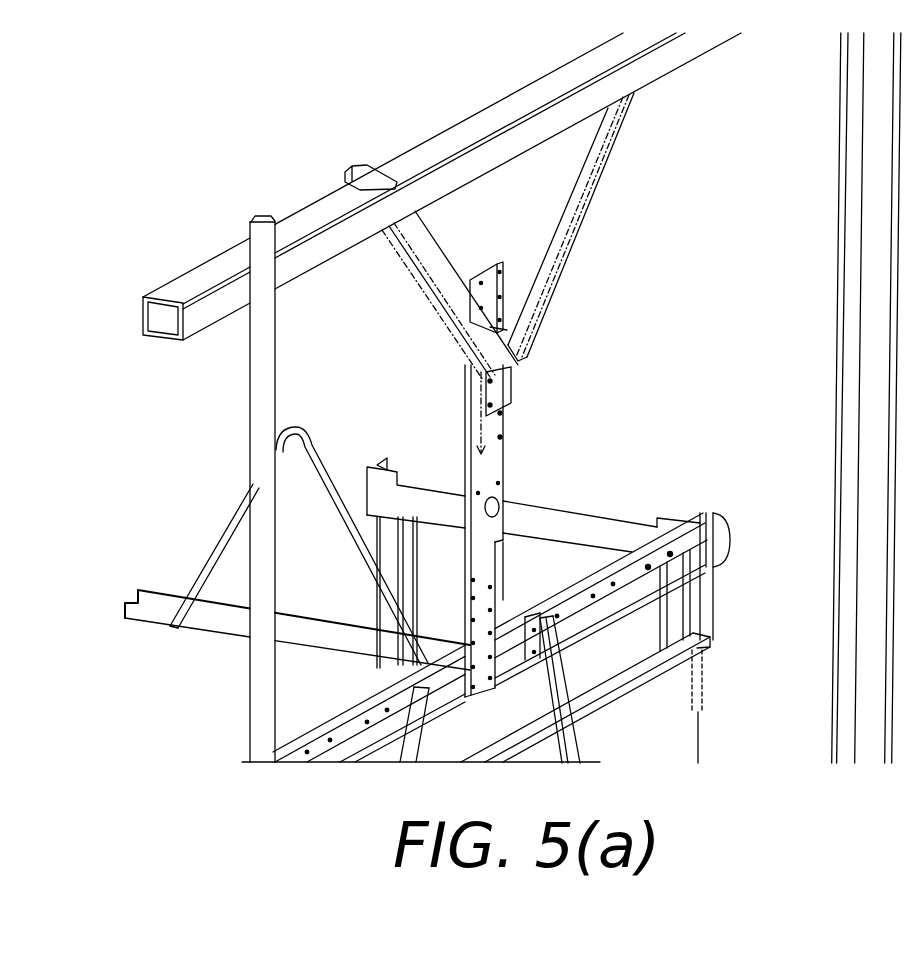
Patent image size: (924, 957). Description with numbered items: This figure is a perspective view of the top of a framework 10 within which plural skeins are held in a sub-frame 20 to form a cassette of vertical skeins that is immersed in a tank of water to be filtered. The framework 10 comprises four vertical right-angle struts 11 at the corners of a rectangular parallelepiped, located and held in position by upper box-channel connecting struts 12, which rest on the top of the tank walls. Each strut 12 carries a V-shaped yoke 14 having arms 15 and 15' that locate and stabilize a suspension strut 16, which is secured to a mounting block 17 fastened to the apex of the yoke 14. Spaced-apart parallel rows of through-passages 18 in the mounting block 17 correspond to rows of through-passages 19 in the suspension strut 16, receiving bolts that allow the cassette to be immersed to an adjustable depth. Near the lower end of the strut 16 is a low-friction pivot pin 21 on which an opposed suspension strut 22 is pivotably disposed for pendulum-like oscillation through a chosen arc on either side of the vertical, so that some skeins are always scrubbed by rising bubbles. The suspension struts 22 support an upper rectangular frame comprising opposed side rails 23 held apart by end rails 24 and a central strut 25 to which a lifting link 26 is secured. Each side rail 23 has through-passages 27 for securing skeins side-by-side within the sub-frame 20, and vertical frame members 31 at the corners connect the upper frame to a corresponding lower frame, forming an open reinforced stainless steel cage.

The framework 10 is at (147, 510).
The vertical right-angle strut 11 is at (250, 425).
The upper box-channel connecting strut 12 is at (329, 262).
The V-shaped yoke 14 is at (424, 319).
The arm of V-shaped yoke 15 is at (453, 294).
The arm of V-shaped yoke 15' is at (590, 227).
The suspension strut 16 is at (505, 458).
The mounting block 17 is at (513, 377).
The through-passages in mounting block 18 is at (490, 381).
The through-passages in suspension strut 19 is at (500, 437).
The sub-frame 20 is at (640, 514).
The low-friction pivot pin 21 is at (494, 503).
The suspension strut 22 is at (500, 563).
The side rail 23 is at (630, 607).
The end rail 24 is at (568, 518).
The central strut 25 is at (333, 657).
The lifting link 26 is at (325, 434).
The through-passages in side rail 27 is at (649, 567).
The vertical frame member 31 is at (417, 583).